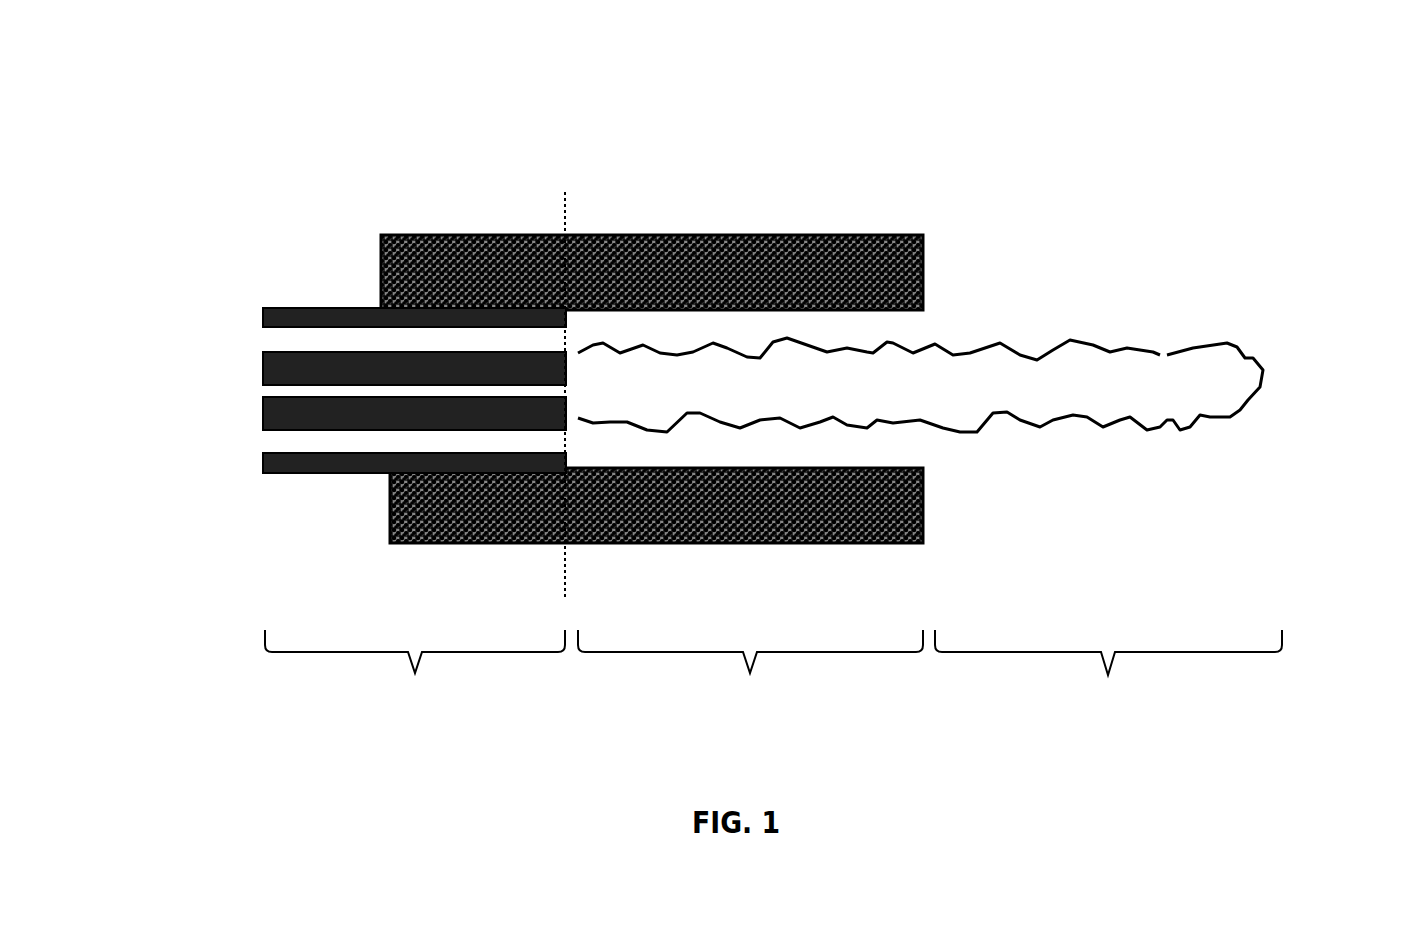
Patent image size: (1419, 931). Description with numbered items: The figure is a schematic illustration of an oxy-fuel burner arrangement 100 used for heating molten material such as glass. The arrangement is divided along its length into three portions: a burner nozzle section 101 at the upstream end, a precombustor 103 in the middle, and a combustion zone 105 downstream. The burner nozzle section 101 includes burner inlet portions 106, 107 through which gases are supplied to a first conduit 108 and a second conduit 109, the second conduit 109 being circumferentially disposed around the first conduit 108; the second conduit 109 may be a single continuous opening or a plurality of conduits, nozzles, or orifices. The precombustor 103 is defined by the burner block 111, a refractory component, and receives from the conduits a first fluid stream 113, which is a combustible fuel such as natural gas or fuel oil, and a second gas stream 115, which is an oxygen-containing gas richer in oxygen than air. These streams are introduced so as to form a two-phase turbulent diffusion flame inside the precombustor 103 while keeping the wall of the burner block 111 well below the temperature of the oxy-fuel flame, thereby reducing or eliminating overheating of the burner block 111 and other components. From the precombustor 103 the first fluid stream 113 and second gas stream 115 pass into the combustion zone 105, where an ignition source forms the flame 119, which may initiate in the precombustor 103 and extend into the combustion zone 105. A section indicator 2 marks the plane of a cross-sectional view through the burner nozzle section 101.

The oxy-fuel burner arrangement 100 is at (460, 100).
The burner nozzle section 101 is at (415, 672).
The precombustor 103 is at (750, 672).
The combustion zone 105 is at (1108, 673).
The burner inlet portion 106 is at (252, 440).
The burner inlet portion 107 is at (252, 392).
The first conduit 108 is at (353, 428).
The second conduit 109 is at (303, 308).
The burner block 111 is at (688, 235).
The first fluid stream 113 is at (567, 393).
The second gas stream 115 is at (567, 440).
The flame 119 is at (1200, 395).
The section line 2- 2 is at (533, 595).